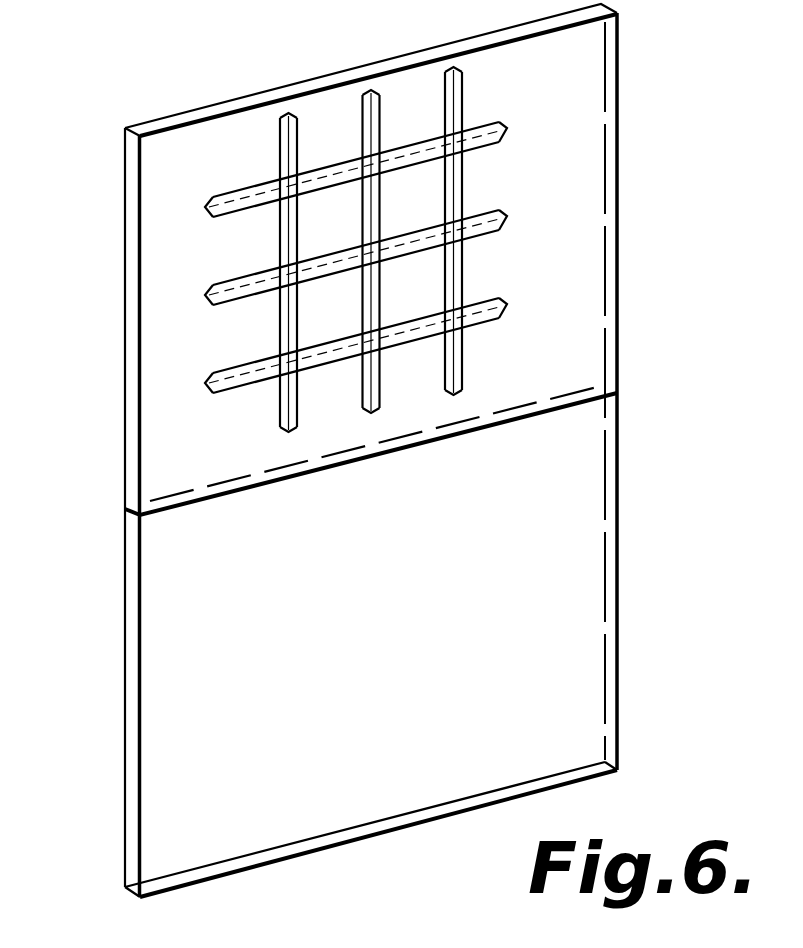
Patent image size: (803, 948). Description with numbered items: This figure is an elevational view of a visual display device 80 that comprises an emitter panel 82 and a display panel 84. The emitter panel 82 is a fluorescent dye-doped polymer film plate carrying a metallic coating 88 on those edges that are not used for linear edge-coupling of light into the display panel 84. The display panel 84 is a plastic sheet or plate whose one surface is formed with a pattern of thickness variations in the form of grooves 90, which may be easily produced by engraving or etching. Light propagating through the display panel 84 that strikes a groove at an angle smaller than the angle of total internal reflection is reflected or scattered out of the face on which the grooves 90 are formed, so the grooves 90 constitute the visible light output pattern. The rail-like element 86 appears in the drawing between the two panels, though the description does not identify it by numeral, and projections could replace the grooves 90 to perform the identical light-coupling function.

The visual display device 80 is at (393, 450).
The emitter panel 82 is at (618, 630).
The display panel 84 is at (618, 70).
The middle rail 86 is at (575, 403).
The metallic coating 88 is at (125, 652).
The grooves 90 is at (500, 305).